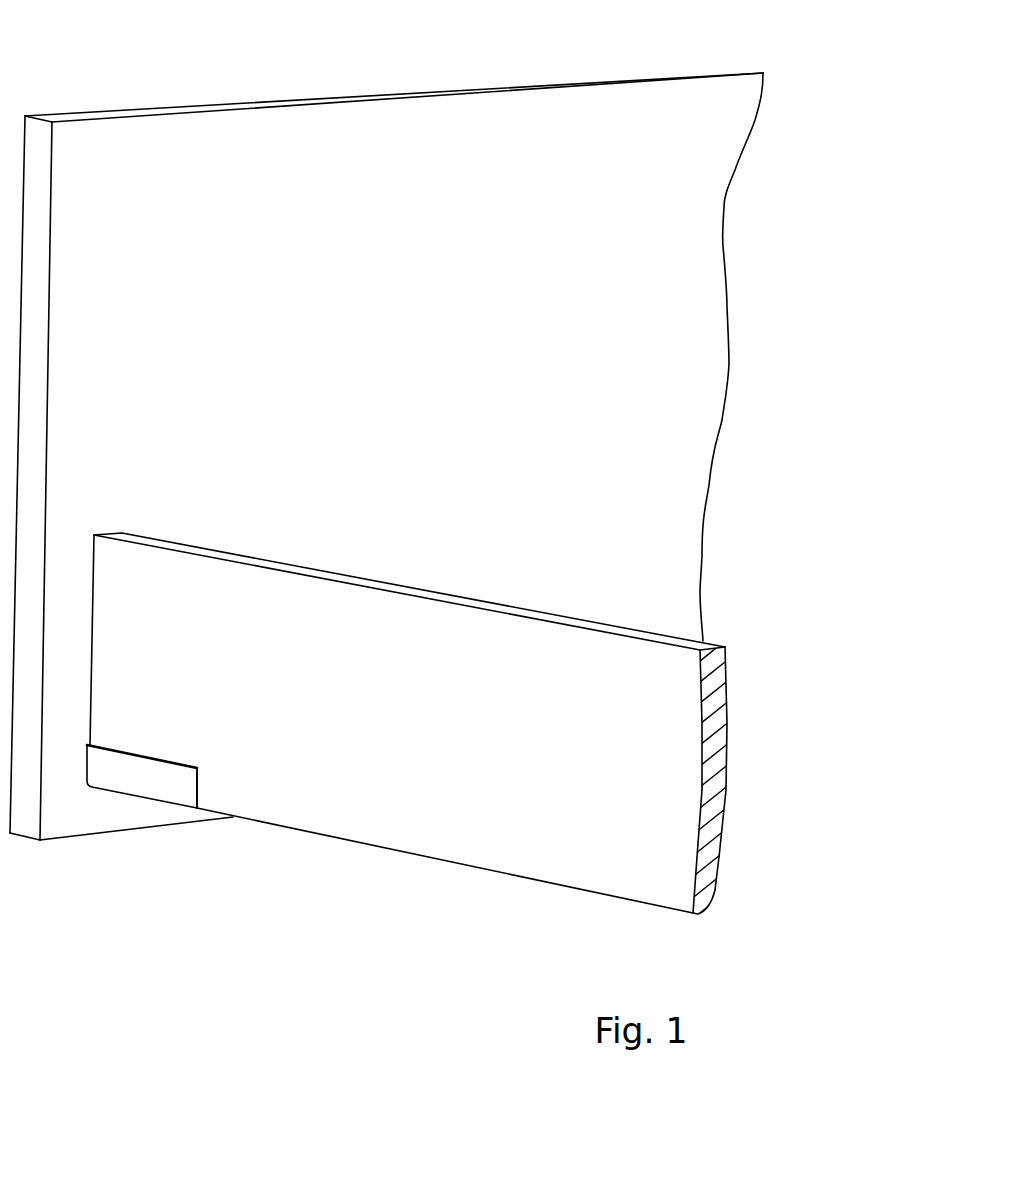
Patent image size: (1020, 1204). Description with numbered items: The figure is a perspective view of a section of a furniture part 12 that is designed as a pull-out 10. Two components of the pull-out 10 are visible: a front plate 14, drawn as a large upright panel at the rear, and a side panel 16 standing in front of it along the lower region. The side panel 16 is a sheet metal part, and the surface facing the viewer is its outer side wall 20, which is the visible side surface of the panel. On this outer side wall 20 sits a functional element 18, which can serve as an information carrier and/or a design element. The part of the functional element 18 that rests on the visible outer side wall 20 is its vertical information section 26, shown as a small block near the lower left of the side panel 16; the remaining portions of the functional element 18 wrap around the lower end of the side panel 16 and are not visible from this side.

The pull-out 10 is at (197, 88).
The furniture part 12 is at (386, 511).
The front plate 14 is at (465, 272).
The side panel 16 is at (336, 788).
The functional element 18 is at (153, 787).
The outer side wall 20 is at (406, 742).
The information section 26 is at (107, 773).